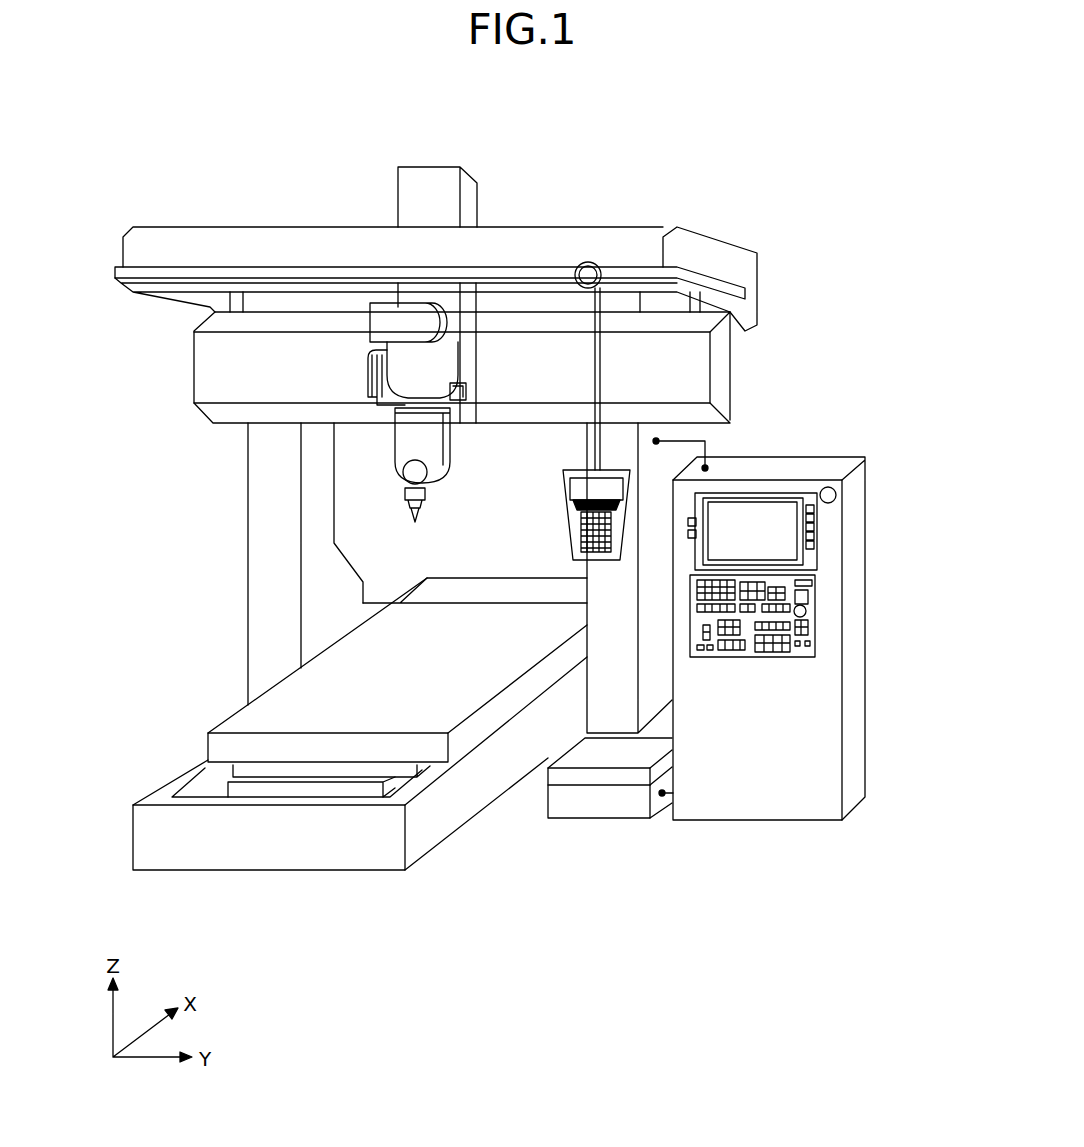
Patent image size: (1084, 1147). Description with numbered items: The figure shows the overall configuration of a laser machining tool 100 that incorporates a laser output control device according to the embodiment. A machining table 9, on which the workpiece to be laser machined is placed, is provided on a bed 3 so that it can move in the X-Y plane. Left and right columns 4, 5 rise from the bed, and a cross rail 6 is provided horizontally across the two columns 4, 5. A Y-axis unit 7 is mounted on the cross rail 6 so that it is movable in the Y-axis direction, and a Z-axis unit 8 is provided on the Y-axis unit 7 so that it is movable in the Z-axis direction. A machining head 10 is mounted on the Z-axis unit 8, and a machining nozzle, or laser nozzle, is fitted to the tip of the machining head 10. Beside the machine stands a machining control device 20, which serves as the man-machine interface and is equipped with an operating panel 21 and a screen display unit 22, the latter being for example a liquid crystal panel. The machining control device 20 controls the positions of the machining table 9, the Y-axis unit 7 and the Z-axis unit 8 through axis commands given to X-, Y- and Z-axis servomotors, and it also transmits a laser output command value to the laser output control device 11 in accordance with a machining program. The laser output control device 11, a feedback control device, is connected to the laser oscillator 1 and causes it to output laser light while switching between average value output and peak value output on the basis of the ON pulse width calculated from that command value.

The laser machining tool 100 is at (768, 162).
The laser oscillator 1 is at (591, 810).
The bed 3 is at (430, 830).
The left column 4 is at (265, 600).
The right column 5 is at (612, 697).
The cross rail 6 is at (695, 355).
The Y-axis unit 7 is at (450, 362).
The Z-axis unit 8 is at (451, 193).
The machining table 9 is at (220, 740).
The machining head 10 is at (410, 508).
The laser output control device 11 is at (548, 777).
The machining control device 20 is at (782, 644).
The operating panel 21 is at (778, 600).
The screen display unit 22 is at (768, 515).